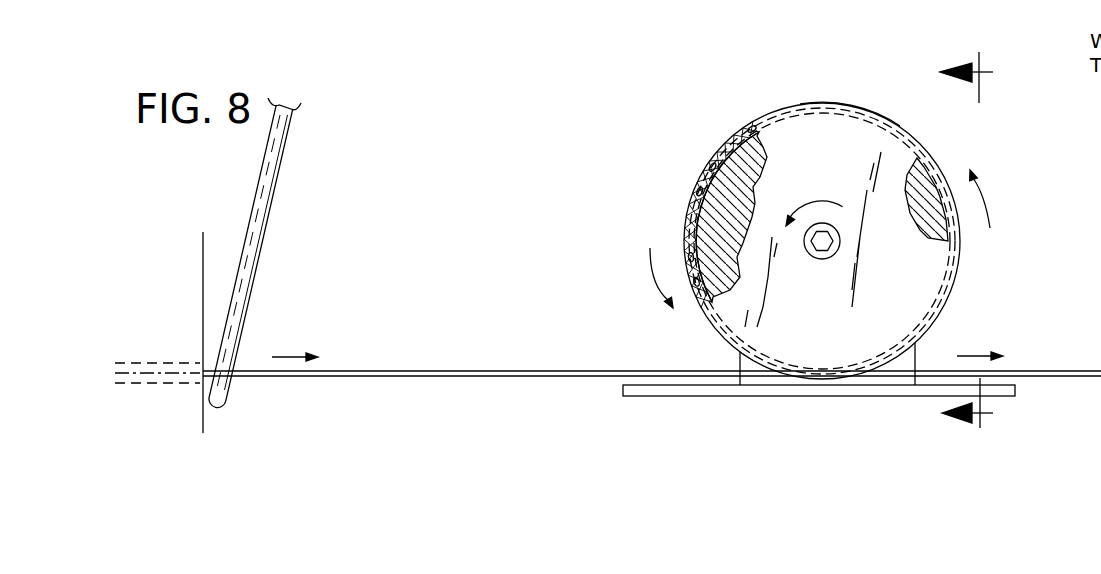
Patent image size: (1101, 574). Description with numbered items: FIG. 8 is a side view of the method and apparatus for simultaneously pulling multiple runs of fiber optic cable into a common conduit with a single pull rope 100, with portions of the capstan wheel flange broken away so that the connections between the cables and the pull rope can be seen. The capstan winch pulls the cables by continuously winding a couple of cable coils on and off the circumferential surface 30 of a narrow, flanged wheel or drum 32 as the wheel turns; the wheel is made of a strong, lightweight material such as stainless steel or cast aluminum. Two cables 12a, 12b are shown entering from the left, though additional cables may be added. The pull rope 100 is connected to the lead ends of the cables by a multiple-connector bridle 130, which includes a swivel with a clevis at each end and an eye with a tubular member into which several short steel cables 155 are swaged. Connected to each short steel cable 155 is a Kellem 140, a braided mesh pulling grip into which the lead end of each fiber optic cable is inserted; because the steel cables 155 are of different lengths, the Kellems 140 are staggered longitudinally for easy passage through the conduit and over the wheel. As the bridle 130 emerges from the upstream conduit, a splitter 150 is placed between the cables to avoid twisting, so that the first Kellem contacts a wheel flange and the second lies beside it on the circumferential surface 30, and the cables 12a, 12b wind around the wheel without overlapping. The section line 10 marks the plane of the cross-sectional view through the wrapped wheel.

The section line 10 is at (978, 242).
The first fiber optic cable 12a is at (432, 370).
The second fiber optic cable 12b is at (752, 127).
The circumferential surface 30 is at (842, 103).
The flanged wheel or drum 32 is at (758, 101).
The pull rope 100 is at (1037, 368).
The multiple-connector bridle 130 is at (651, 180).
The Kellem 140 is at (730, 138).
The splitter 150 is at (273, 187).
The short steel cables 155 is at (700, 305).